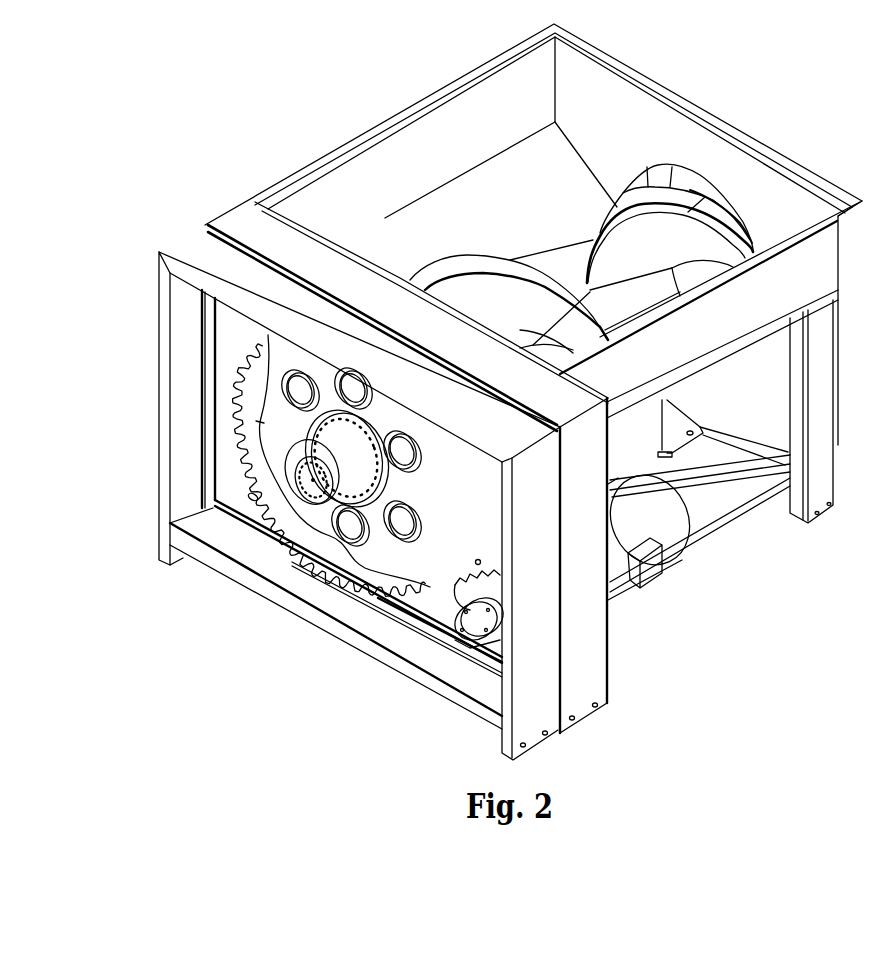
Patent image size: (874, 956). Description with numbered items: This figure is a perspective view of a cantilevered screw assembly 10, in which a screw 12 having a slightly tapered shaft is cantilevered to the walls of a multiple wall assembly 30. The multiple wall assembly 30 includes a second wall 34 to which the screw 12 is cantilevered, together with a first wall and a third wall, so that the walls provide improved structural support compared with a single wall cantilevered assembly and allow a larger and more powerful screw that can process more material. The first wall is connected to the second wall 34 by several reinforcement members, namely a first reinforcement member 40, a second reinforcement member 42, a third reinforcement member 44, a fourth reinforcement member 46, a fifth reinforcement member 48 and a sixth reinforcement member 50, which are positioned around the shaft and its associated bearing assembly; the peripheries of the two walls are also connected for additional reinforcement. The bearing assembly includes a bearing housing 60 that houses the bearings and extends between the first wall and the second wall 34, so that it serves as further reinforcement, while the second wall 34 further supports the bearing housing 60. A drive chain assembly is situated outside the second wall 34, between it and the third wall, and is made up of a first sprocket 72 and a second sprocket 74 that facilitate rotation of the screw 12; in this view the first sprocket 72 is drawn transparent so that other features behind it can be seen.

The cantilevered screw assembly 10 is at (724, 92).
The screw 12 is at (450, 267).
The multiple wall assembly 30 is at (218, 207).
The second wall 34 is at (228, 368).
The first reinforcement member 40 is at (188, 251).
The second reinforcement member 42 is at (347, 545).
The third reinforcement member 44 is at (288, 376).
The fourth reinforcement member 46 is at (420, 455).
The fifth reinforcement member 48 is at (290, 450).
The sixth reinforcement member 50 is at (420, 518).
The bearing housing 60 is at (365, 425).
The first sprocket 72 is at (237, 412).
The second sprocket 74 is at (482, 645).